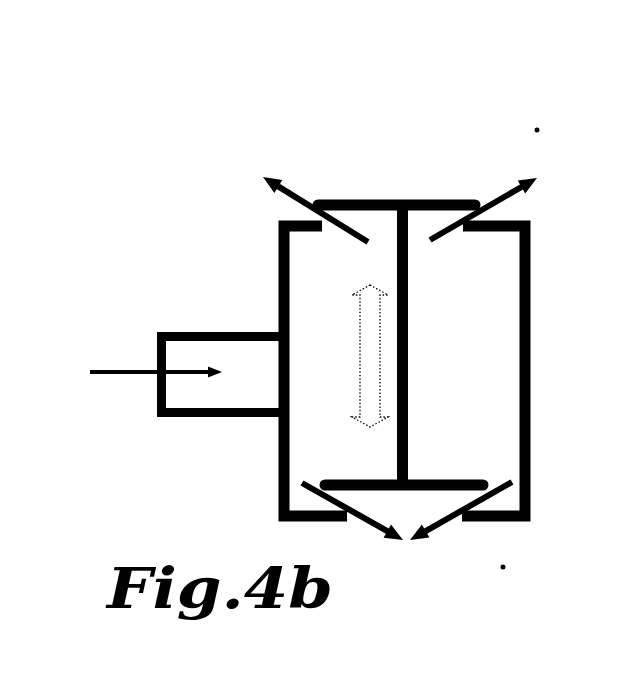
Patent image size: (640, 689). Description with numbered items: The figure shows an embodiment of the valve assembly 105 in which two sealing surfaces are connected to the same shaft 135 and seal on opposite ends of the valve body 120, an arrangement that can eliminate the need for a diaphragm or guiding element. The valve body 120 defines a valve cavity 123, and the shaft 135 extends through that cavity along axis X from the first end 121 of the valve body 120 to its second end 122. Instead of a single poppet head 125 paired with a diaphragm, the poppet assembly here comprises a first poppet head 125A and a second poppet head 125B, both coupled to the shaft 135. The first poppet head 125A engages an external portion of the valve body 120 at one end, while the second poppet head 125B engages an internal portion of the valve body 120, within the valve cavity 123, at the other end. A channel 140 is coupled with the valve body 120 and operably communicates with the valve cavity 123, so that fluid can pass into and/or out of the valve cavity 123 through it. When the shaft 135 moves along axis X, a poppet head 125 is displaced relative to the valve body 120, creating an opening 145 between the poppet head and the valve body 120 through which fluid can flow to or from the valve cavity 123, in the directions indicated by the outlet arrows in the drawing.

The valve assembly 105 is at (306, 120).
The valve body 120 is at (532, 270).
The first end 121 is at (278, 225).
The second end 122 is at (530, 507).
The valve cavity 123 is at (494, 436).
The poppet head 125 is at (440, 198).
The first poppet head 125A is at (367, 198).
The second poppet head 125B is at (441, 480).
The shaft 135 is at (408, 347).
The channel 140 is at (192, 418).
The opening 145 is at (296, 211).